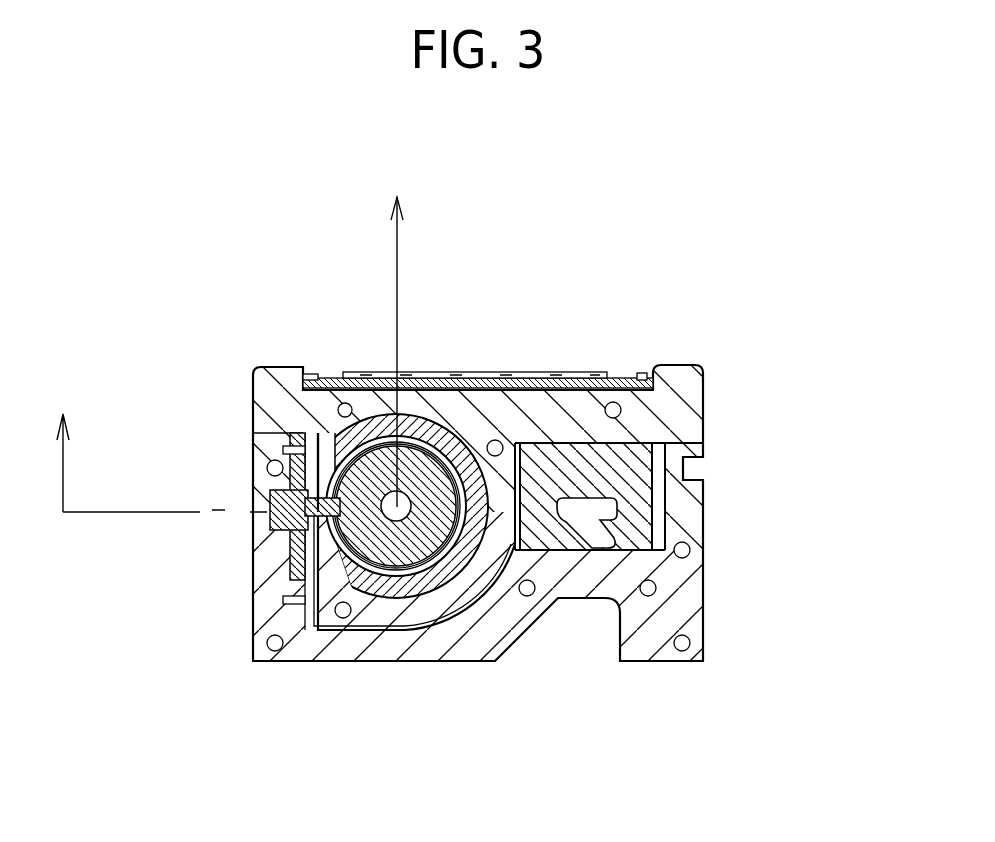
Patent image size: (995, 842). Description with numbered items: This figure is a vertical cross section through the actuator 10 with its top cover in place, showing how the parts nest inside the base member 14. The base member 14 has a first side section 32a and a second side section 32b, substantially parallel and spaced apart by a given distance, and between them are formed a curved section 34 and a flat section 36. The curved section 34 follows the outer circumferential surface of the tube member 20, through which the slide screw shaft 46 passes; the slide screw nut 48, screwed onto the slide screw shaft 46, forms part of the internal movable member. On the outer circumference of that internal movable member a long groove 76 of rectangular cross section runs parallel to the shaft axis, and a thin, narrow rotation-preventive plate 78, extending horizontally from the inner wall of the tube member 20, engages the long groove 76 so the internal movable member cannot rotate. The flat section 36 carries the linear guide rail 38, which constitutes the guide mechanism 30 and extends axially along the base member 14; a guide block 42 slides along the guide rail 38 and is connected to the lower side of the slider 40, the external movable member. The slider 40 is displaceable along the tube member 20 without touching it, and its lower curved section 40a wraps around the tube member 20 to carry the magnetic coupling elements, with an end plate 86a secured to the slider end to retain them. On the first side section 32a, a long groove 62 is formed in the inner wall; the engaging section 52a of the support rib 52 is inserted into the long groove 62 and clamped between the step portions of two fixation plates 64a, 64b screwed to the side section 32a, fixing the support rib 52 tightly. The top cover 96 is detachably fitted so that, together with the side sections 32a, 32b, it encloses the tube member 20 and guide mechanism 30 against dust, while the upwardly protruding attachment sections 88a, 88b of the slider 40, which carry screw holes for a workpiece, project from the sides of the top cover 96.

The spindle device 10 is at (672, 222).
The base member 14 is at (705, 610).
The tube member 20 is at (445, 600).
The guide mechanism 30 is at (630, 515).
The first side section 32a is at (273, 560).
The second side section 32b is at (697, 543).
The curved section 34 is at (500, 630).
The flat section 36 is at (642, 548).
The linear guide rail 38 is at (615, 540).
The slider 40 is at (513, 427).
The curved section 40a is at (388, 630).
The guide block 42 is at (627, 468).
The slide screw shaft 46 is at (352, 618).
The slide screw nut 48 is at (358, 437).
The support rib 52 is at (295, 437).
The engaging section 52a is at (270, 514).
The long groove 62 is at (262, 510).
The fixation plate 64a is at (290, 450).
The fixation plate 64b is at (288, 599).
The long groove 76 is at (316, 605).
The rotation-preventive plate 78 is at (330, 455).
The end plate 86a is at (458, 372).
The attachment section 88a is at (297, 370).
The attachment section 88b is at (655, 366).
The top cover 96 is at (407, 425).